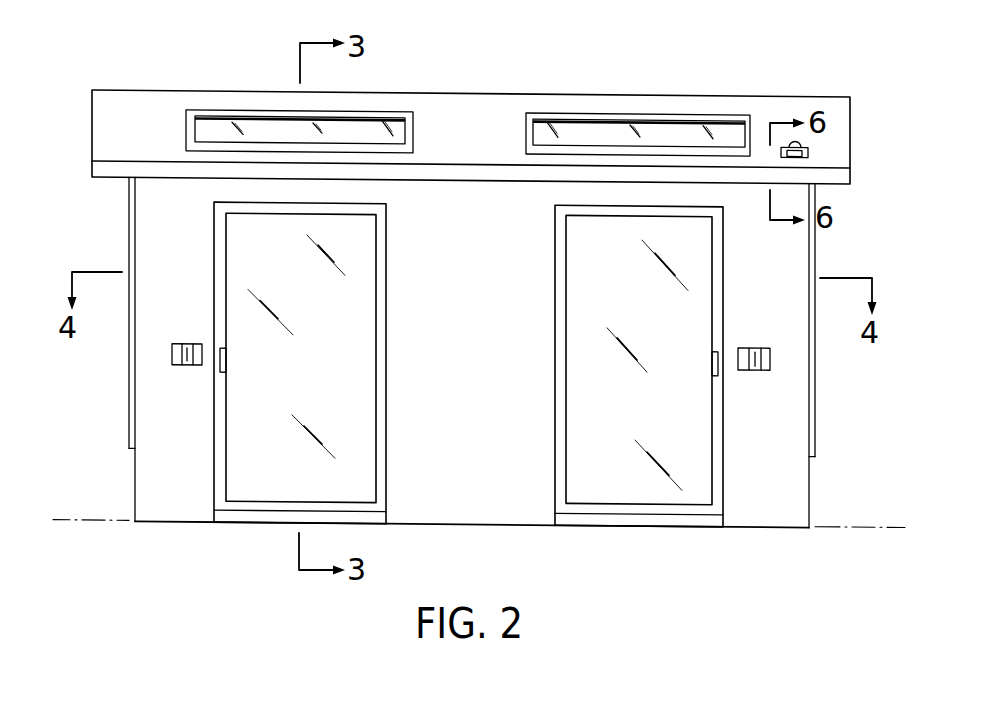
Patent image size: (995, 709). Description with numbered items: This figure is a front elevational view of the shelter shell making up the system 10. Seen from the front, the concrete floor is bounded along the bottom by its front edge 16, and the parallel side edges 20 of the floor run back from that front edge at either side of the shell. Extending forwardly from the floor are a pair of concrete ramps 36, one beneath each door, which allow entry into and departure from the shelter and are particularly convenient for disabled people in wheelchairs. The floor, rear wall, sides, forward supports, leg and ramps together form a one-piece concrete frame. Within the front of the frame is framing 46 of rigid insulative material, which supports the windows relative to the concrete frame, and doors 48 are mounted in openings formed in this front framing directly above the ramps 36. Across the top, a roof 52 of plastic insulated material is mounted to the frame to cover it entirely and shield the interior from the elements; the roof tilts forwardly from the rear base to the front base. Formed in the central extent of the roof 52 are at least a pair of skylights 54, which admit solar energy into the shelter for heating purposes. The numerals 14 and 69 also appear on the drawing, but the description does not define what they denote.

The system 10 is at (148, 88).
The right compartment base 14 is at (740, 527).
The front edge 16 is at (173, 500).
The side edges 20 is at (135, 485).
The concrete ramps 36 is at (241, 517).
The framing 46 is at (472, 482).
The doors 48 is at (279, 483).
The roof 52 is at (545, 106).
The skylights 54 is at (262, 118).
The door handle lock 69 is at (173, 364).